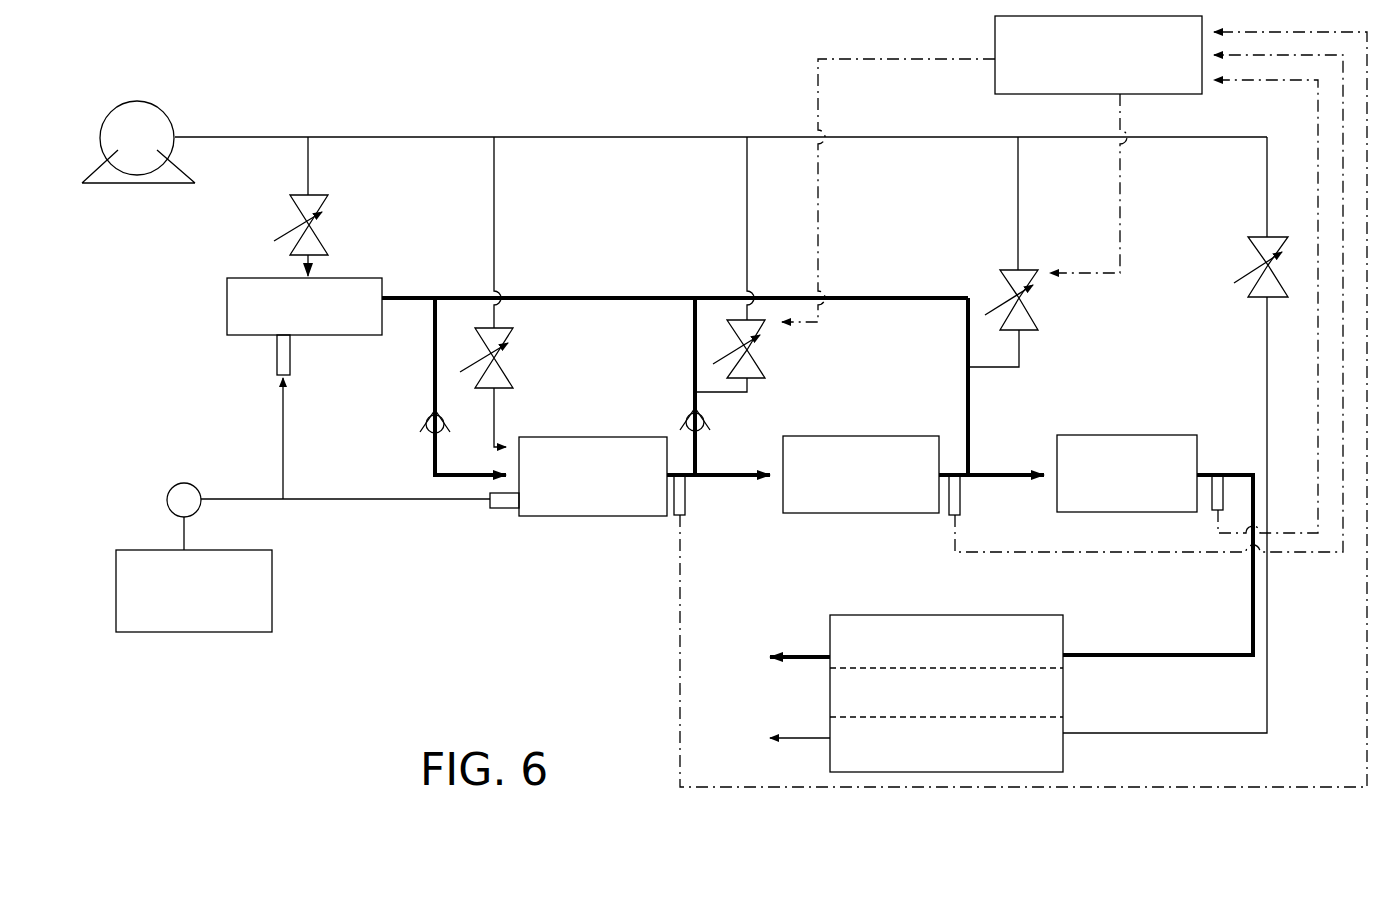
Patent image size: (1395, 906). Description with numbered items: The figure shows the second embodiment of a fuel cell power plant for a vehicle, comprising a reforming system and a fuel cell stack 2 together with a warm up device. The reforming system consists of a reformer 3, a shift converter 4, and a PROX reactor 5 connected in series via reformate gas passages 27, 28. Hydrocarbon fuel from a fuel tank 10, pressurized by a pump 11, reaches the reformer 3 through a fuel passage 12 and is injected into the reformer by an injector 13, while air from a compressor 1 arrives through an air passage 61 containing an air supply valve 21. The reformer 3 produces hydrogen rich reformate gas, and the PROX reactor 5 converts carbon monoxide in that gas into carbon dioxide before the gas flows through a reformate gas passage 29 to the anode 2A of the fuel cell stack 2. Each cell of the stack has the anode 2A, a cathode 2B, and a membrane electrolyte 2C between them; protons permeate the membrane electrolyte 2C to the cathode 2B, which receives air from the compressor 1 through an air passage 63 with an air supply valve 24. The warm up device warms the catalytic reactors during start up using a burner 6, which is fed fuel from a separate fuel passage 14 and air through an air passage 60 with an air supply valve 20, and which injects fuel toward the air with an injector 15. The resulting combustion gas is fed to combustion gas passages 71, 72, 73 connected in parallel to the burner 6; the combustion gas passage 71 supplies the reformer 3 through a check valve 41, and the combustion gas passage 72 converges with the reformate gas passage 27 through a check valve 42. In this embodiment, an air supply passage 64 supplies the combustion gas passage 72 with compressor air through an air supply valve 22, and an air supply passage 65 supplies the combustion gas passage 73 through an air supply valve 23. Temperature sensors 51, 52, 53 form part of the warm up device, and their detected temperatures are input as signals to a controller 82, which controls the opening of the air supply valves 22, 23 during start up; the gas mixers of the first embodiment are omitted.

The compressor 1 is at (168, 115).
The fuel cell stack 2 is at (1036, 695).
The anode 2A is at (830, 638).
The cathode 2B is at (830, 758).
The membrane electrolyte 2C is at (830, 695).
The reformer 3 is at (567, 516).
The shift converter 4 is at (894, 436).
The preferential oxidation reactor 5 is at (1117, 432).
The burner 6 is at (366, 278).
The fuel tank 10 is at (272, 596).
The pump 11 is at (180, 483).
The fuel passage 12 is at (360, 500).
The injector 13 is at (505, 508).
The fuel passage 14 is at (288, 420).
The injector 15 is at (276, 362).
The air supply valve 20 is at (292, 214).
The air supply valve 21 is at (513, 376).
The air supply valve 22 is at (765, 345).
The air supply valve 23 is at (1028, 333).
The air supply valve 24 is at (1248, 250).
The reformate gas passage 27 is at (736, 468).
The reformate gas passage 28 is at (1005, 468).
The reformate gas passage 29 is at (1200, 658).
The check valve 41 is at (424, 430).
The check valve 42 is at (685, 420).
The temperature sensor 51 is at (678, 518).
The temperature sensor 52 is at (948, 518).
The temperature sensor 53 is at (1217, 515).
The air passage 60 is at (308, 160).
The air passage 61 is at (494, 195).
The air passage 63 is at (1268, 178).
The air supply passage 64 is at (747, 182).
The air supply passage 65 is at (1018, 183).
The combustion gas passage 71 is at (433, 356).
The combustion gas passage 72 is at (693, 325).
The combustion gas passage 73 is at (966, 336).
The controller 82 is at (994, 75).